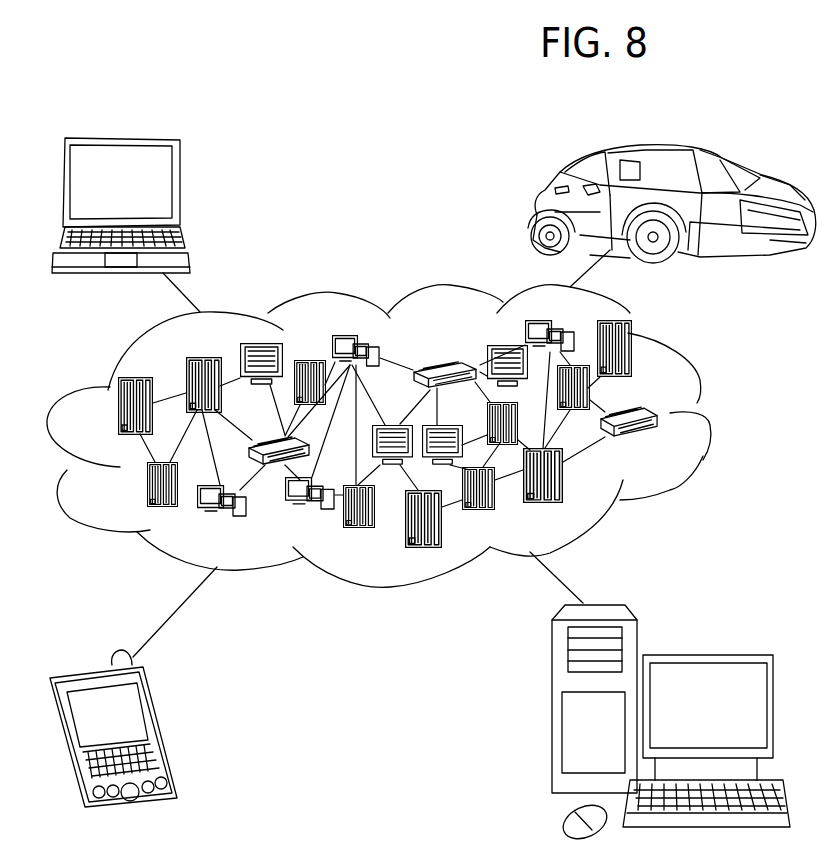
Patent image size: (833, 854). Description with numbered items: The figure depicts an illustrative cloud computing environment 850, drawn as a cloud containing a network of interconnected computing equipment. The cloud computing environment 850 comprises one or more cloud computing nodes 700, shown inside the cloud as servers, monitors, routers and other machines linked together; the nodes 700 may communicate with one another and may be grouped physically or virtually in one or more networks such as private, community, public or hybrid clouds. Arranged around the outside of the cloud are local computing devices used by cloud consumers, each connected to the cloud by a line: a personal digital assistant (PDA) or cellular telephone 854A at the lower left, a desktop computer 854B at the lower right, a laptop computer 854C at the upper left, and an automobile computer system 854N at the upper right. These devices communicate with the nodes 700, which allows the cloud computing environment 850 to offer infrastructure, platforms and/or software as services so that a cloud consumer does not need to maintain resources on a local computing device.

The cloud computing nodes 700 is at (664, 444).
The cloud computing environment 850 is at (708, 420).
The personal digital assistant (PDA) or cellular telephone 854A is at (163, 722).
The desktop computer 854B is at (703, 652).
The laptop computer 854C is at (180, 190).
The automobile computer system 854N is at (537, 215).